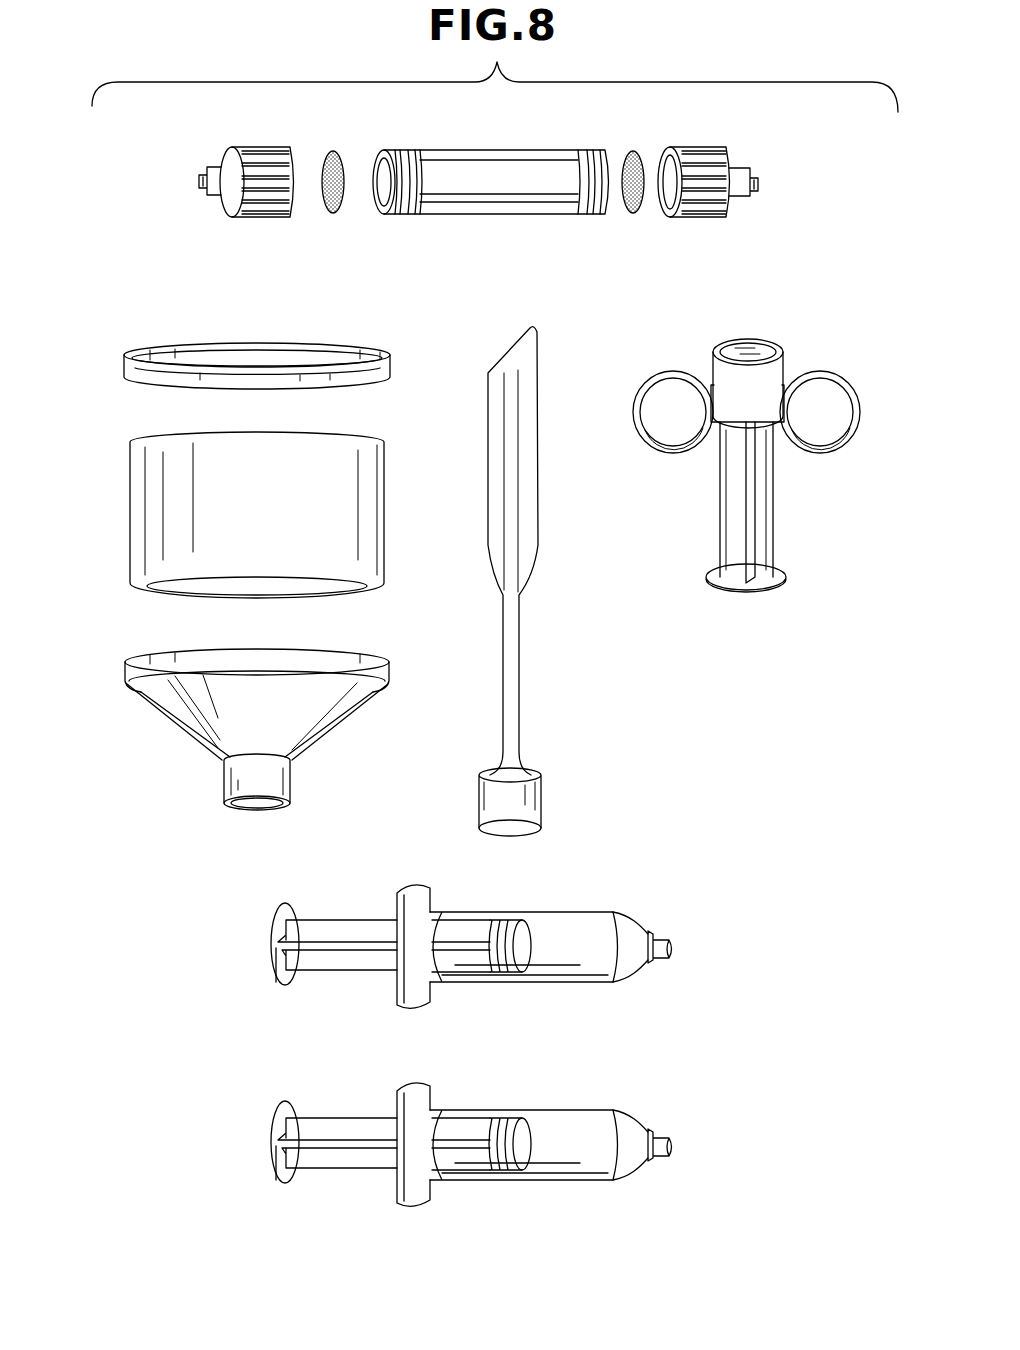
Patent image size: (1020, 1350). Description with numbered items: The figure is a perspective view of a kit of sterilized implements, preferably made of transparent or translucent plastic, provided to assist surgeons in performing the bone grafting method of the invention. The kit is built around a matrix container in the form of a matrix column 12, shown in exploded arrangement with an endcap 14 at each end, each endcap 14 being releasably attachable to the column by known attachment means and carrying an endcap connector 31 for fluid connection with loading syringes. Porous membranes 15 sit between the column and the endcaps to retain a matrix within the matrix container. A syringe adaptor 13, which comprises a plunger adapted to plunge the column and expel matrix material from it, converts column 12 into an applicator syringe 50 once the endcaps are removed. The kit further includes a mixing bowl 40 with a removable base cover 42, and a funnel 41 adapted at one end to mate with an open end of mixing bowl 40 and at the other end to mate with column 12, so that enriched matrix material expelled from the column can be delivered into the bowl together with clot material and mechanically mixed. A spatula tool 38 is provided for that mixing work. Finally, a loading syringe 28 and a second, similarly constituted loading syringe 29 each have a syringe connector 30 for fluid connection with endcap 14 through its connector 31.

The matrix column 12 is at (490, 150).
The syringe adaptor 13 is at (765, 490).
The endcap 14 is at (259, 146).
The porous membranes 15 is at (329, 151).
The loading syringe 28 is at (483, 912).
The second loading syringe 29 is at (483, 1110).
The syringe connector 30 is at (655, 935).
The endcap connector 31 is at (216, 169).
The spatula tool 38 is at (521, 640).
The mixing bowl 40 is at (289, 448).
The funnel 41 is at (262, 343).
The removable base cover 42 is at (313, 730).
The applicator syringe 50 is at (691, 329).